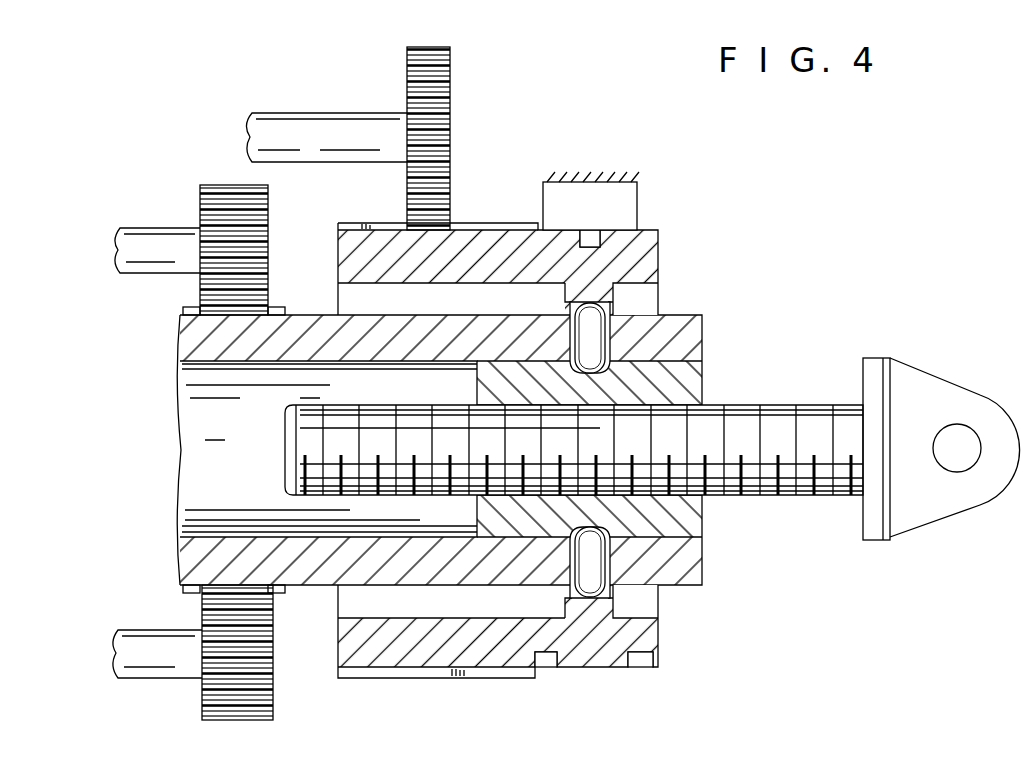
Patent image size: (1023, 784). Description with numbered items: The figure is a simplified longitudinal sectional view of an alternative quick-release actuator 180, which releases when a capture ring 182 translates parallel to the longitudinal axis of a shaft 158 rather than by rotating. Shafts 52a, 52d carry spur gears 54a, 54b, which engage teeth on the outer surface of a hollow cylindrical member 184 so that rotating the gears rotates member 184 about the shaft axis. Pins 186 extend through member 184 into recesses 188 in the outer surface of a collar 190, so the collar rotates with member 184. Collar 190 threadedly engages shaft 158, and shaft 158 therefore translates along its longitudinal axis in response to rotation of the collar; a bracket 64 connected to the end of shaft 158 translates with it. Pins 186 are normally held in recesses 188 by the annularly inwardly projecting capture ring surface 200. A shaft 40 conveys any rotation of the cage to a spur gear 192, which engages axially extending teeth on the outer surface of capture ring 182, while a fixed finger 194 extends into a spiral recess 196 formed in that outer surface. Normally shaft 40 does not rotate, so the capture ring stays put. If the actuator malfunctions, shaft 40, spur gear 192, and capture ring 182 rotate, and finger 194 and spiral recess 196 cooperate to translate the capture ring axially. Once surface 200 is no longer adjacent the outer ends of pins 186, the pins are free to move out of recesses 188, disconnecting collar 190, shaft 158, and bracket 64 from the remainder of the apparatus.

The shaft 40 is at (310, 127).
The shaft 52a is at (163, 237).
The shaft 52d is at (165, 638).
The spur gear 54a is at (268, 199).
The spur gear 54b is at (273, 693).
The bracket 64 is at (916, 520).
The shaft 158 is at (790, 486).
The quick-release actuator 180 is at (773, 262).
The capture ring 182 is at (658, 260).
The hollow cylindrical member 184 is at (692, 337).
The pin 186 is at (590, 335).
The recess 188 is at (572, 357).
The collar 190 is at (706, 378).
The spur gear 192 is at (452, 82).
The fixed finger 194 is at (590, 243).
The spiral recess 196 is at (600, 238).
The capture ring surface 200 is at (565, 303).